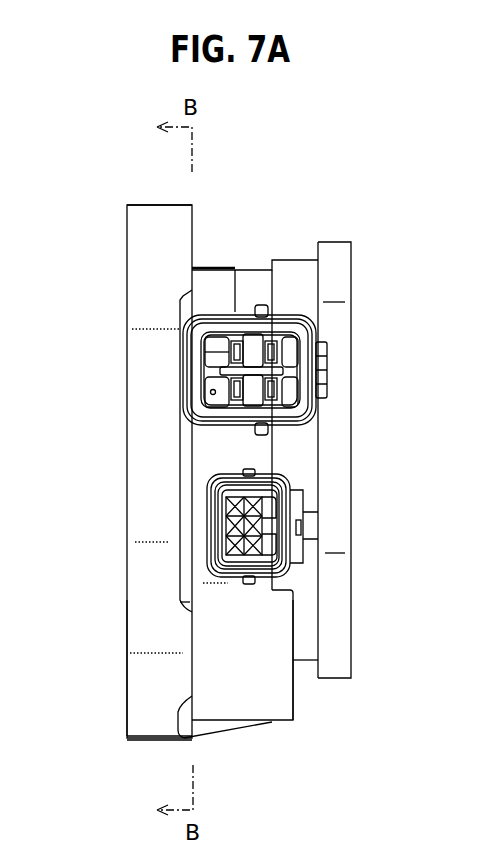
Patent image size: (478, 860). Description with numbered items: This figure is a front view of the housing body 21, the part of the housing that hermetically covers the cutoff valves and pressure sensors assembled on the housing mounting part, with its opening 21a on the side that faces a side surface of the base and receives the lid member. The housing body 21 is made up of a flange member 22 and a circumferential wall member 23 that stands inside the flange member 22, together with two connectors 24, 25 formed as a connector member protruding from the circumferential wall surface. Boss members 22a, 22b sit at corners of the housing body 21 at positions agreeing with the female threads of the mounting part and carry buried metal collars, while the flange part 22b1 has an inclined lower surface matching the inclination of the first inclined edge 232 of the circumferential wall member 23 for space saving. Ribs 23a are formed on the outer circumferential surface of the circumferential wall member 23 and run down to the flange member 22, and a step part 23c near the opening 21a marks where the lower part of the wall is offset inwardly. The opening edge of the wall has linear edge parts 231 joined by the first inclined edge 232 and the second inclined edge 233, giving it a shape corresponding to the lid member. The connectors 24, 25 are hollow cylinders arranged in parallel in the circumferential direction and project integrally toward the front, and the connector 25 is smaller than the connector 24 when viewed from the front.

The housing body 21 is at (283, 248).
The opening 21a is at (365, 382).
The flange member 22 is at (132, 308).
The boss member 22a is at (133, 222).
The boss member 22b is at (130, 645).
The flange part 22b1 is at (130, 718).
The circumferential wall member 23 is at (268, 700).
The rib 23a is at (217, 734).
The step part 23c is at (295, 705).
The connector 24 is at (305, 426).
The connector 25 is at (283, 575).
The linear edge part 231 is at (345, 470).
The first inclined edge 232 is at (345, 638).
The second inclined edge 233 is at (343, 275).